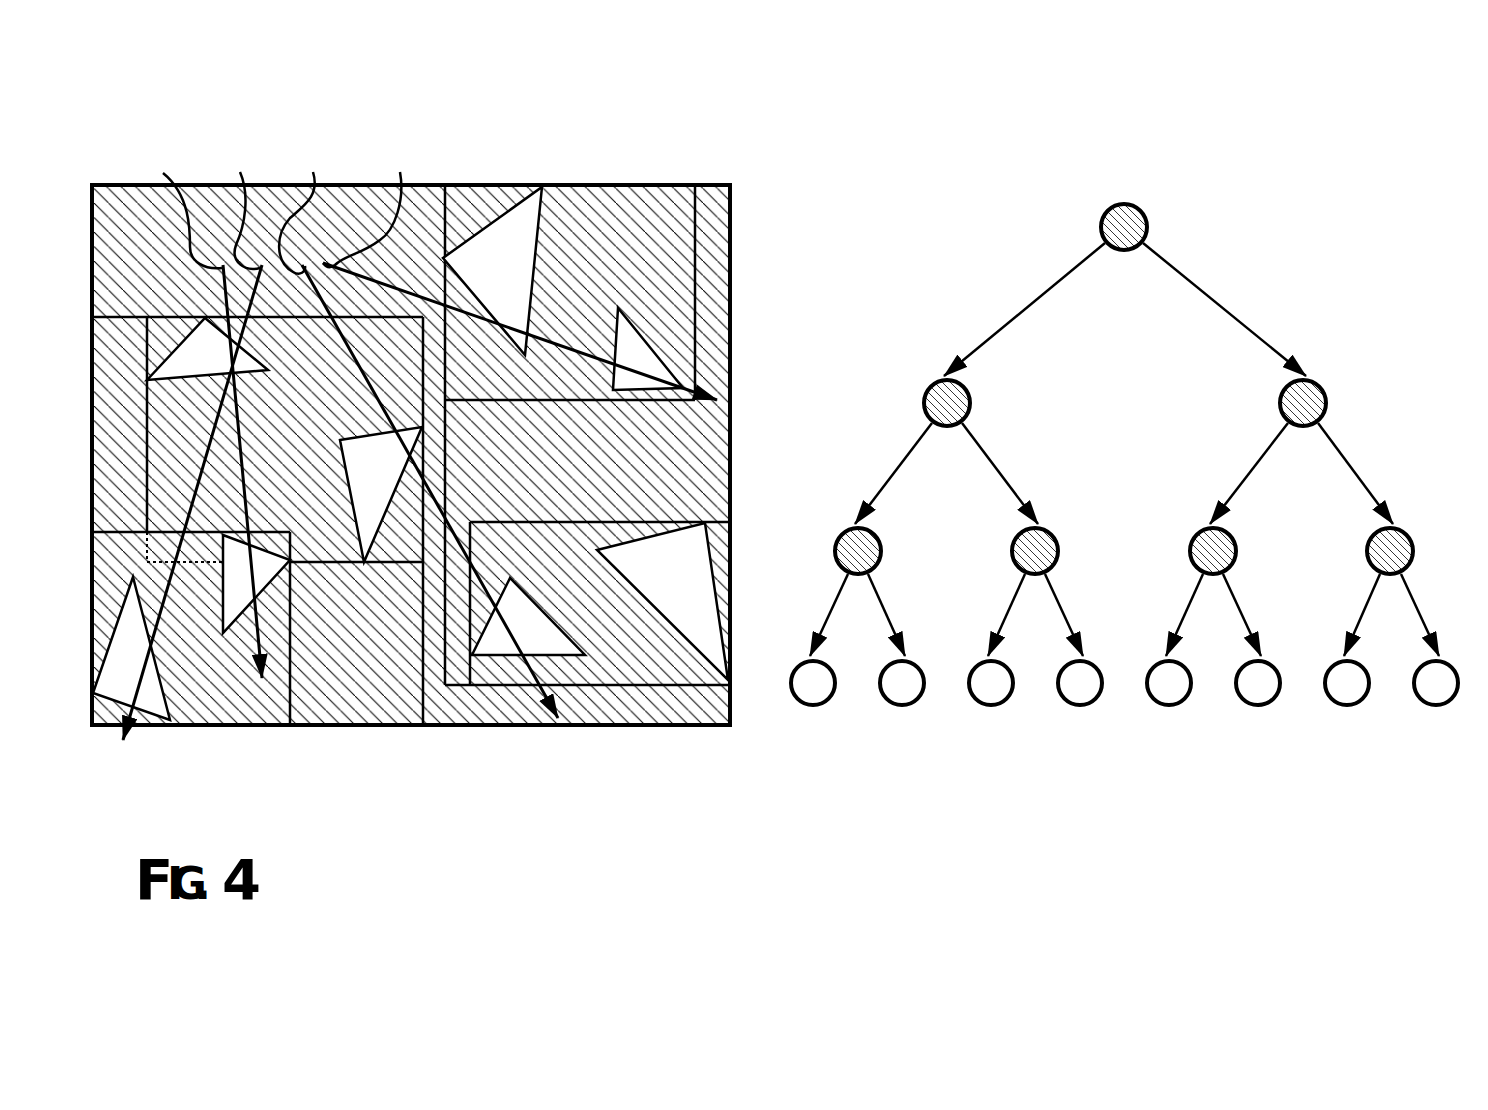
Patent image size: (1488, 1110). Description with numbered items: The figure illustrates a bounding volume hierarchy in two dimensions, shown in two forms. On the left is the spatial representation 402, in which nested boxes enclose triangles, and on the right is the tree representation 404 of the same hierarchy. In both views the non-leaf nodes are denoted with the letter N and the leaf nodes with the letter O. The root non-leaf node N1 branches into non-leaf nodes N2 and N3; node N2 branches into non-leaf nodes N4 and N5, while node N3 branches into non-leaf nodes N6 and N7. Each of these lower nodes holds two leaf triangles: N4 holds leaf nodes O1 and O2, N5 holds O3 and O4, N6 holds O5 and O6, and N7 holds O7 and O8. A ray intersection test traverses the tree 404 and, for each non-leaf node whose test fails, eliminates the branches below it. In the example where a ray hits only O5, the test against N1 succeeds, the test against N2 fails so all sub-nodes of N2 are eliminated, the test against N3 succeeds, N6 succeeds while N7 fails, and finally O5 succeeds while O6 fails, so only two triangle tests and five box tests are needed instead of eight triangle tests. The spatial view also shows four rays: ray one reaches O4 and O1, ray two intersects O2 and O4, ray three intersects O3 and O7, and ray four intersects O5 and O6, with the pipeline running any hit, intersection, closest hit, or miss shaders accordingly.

The spatial representation 402 is at (303, 117).
The tree representation 404 is at (910, 145).
The non-leaf node N1 is at (636, 207).
The non-leaf node N2 is at (694, 541).
The non-leaf node N3 is at (950, 431).
The non-leaf node N4 is at (554, 594).
The non-leaf node N5 is at (657, 500).
The non-leaf node N6 is at (927, 419).
The non-leaf node N7 is at (995, 578).
The leaf node O1 is at (465, 668).
The leaf node O2 is at (575, 647).
The leaf node O3 is at (678, 593).
The leaf node O4 is at (626, 539).
The leaf node O5 is at (818, 473).
The leaf node O6 is at (948, 534).
The leaf node O7 is at (922, 669).
The leaf node O8 is at (1029, 641).